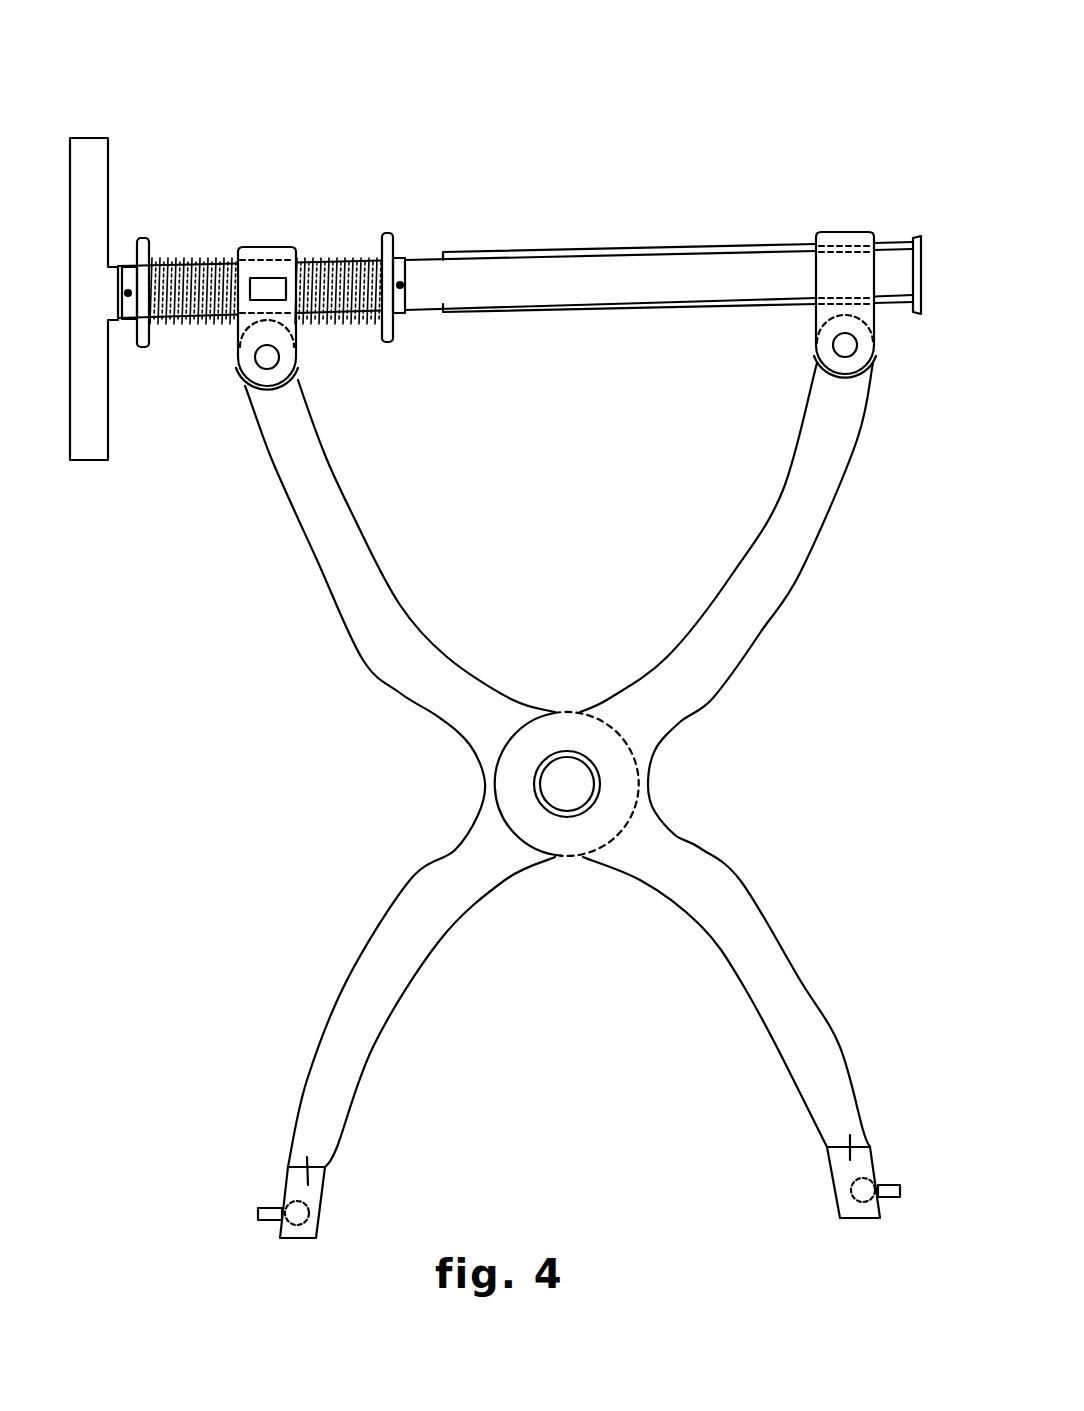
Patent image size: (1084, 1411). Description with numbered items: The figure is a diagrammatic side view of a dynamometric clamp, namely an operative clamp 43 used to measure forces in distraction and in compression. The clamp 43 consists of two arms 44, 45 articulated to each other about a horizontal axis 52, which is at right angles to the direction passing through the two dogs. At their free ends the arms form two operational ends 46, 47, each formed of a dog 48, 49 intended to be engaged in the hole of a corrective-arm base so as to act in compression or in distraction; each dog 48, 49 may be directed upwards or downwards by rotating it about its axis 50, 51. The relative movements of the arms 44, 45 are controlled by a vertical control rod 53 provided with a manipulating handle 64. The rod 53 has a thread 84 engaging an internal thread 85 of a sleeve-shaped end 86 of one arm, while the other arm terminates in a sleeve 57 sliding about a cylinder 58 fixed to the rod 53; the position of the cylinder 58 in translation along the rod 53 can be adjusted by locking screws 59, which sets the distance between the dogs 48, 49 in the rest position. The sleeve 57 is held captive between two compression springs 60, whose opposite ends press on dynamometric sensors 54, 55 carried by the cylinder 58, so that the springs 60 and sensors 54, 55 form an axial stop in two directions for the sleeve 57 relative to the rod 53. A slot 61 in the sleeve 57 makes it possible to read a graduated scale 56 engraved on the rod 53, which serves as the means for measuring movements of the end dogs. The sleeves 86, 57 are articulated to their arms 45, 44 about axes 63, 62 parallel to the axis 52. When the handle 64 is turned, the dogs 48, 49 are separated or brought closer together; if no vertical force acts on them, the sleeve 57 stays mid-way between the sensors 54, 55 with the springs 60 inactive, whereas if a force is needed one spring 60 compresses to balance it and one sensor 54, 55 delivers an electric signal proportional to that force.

The operative clamp 43 is at (550, 283).
The arm 44 is at (368, 618).
The arm 45 is at (732, 643).
The operational end 46 is at (310, 1133).
The operational end 47 is at (832, 1102).
The dog 48 is at (268, 1208).
The dog 49 is at (891, 1183).
The axis 50 is at (327, 1165).
The axis 51 is at (840, 1147).
The horizontal axis 52 is at (567, 786).
The control rod 53 is at (710, 277).
The dynamometric sensor 54 is at (144, 238).
The dynamometric sensor 55 is at (395, 235).
The graduated scale 56 is at (264, 247).
The sleeve 57 is at (243, 330).
The cylinder 58 is at (407, 262).
The locking screw 59 is at (130, 296).
The compression spring 60 is at (200, 263).
The slot 61 is at (280, 282).
The axis 62 is at (266, 362).
The axis 63 is at (847, 350).
The manipulating handle 64 is at (92, 190).
The thread 84 is at (587, 253).
The internal thread 85 is at (828, 243).
The sleeve-shaped end 86 is at (853, 238).